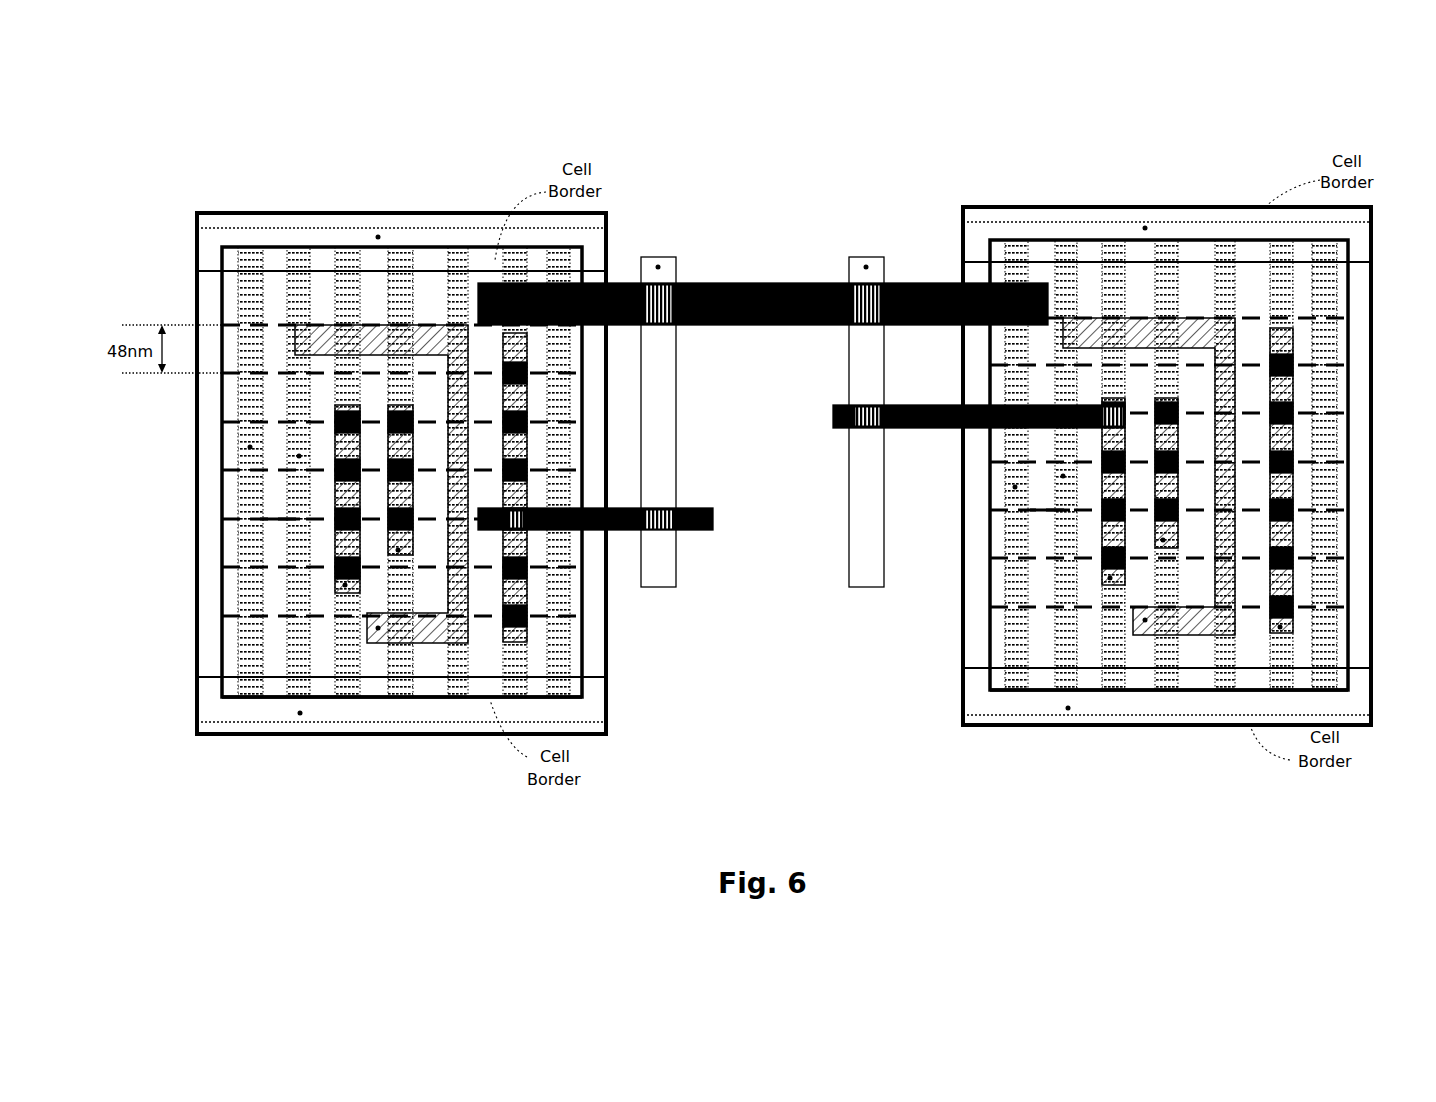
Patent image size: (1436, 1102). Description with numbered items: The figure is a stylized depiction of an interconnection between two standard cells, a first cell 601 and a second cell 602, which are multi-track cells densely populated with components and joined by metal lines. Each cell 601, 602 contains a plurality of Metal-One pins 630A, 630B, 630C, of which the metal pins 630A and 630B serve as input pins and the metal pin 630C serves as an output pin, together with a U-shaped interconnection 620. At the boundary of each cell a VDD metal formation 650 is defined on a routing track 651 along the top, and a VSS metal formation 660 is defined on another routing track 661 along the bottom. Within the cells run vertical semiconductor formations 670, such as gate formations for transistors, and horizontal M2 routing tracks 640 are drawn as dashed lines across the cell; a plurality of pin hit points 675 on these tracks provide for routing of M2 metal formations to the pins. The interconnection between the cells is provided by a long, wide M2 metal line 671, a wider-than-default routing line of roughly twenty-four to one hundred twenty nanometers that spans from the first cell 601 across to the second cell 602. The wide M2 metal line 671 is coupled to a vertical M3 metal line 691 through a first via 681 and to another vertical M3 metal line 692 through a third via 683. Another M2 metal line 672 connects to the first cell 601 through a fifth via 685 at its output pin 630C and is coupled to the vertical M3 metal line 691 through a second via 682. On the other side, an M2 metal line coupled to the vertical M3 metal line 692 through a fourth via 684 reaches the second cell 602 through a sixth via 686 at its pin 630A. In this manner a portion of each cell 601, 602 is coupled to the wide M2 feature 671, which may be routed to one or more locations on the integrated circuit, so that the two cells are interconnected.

The first cell 601 is at (262, 84).
The second cell 602 is at (1280, 76).
The VDD metal formation 650 is at (378, 237).
The VSS metal formation 660 is at (300, 713).
The routing track 651 is at (1040, 242).
The routing track 661 is at (1192, 690).
The M2 tracks 640 is at (1047, 365).
The vertical semiconductor formations 670 is at (299, 456).
The pin hit points 675 is at (280, 519).
The U-shaped interconnection 620 is at (378, 628).
The metal pin 630A is at (1110, 578).
The metal pin 630B is at (398, 550).
The metal pin 630C is at (500, 640).
The M2 metal line 671 is at (815, 328).
The M2 metal line 672 is at (700, 508).
The vertical M3 metal line 691 is at (660, 257).
The vertical M3 metal line 692 is at (865, 257).
The first via (V1) 681 is at (668, 285).
The second via (V2) 682 is at (670, 530).
The via (V3) 683 is at (858, 285).
The fourth via (V4) 684 is at (858, 410).
The fifth via (V5) 685 is at (520, 530).
The sixth via (V6) 686 is at (1105, 425).